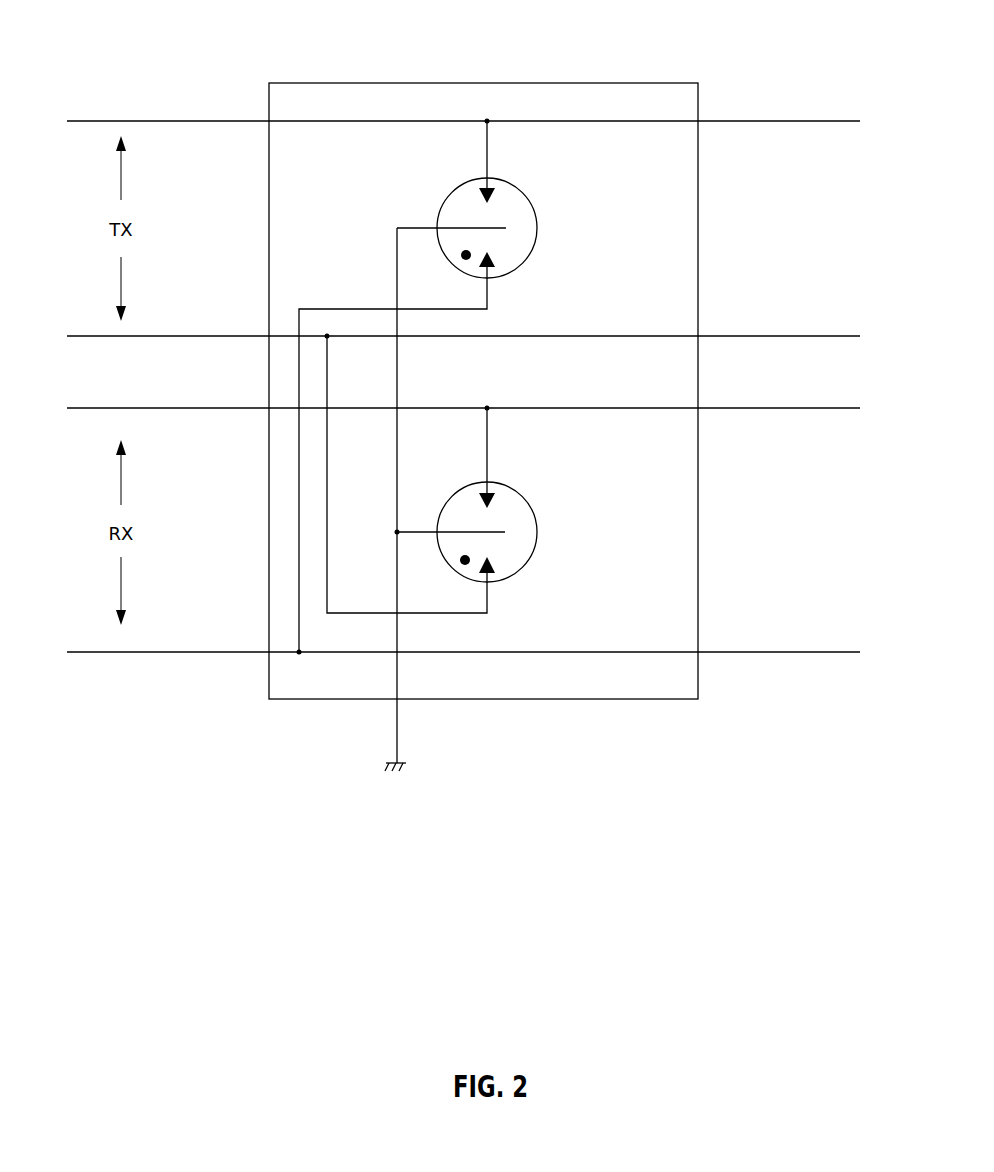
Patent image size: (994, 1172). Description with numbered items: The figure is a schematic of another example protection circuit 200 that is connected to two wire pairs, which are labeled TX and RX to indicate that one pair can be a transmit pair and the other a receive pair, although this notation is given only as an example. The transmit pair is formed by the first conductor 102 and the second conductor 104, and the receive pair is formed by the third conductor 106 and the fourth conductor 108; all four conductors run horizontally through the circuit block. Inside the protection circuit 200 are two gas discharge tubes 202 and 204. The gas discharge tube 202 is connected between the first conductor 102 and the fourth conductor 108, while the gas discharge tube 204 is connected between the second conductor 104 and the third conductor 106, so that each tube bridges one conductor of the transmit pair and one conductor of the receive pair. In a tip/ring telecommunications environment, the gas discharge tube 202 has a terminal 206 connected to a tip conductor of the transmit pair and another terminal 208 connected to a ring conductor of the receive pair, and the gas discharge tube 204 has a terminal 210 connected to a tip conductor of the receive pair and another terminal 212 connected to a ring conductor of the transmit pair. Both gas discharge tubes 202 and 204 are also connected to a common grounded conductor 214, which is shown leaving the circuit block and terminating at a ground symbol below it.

The protection circuit 200 is at (580, 83).
The first conductor 102 is at (753, 121).
The second conductor 104 is at (753, 336).
The third conductor 106 is at (760, 408).
The fourth conductor 108 is at (740, 652).
The gas discharge tube 202 is at (536, 210).
The gas discharge tube 204 is at (538, 522).
The terminal 206 is at (487, 163).
The terminal 208 is at (487, 288).
The terminal 210 is at (487, 462).
The terminal 212 is at (487, 590).
The grounded conductor 214 is at (397, 730).